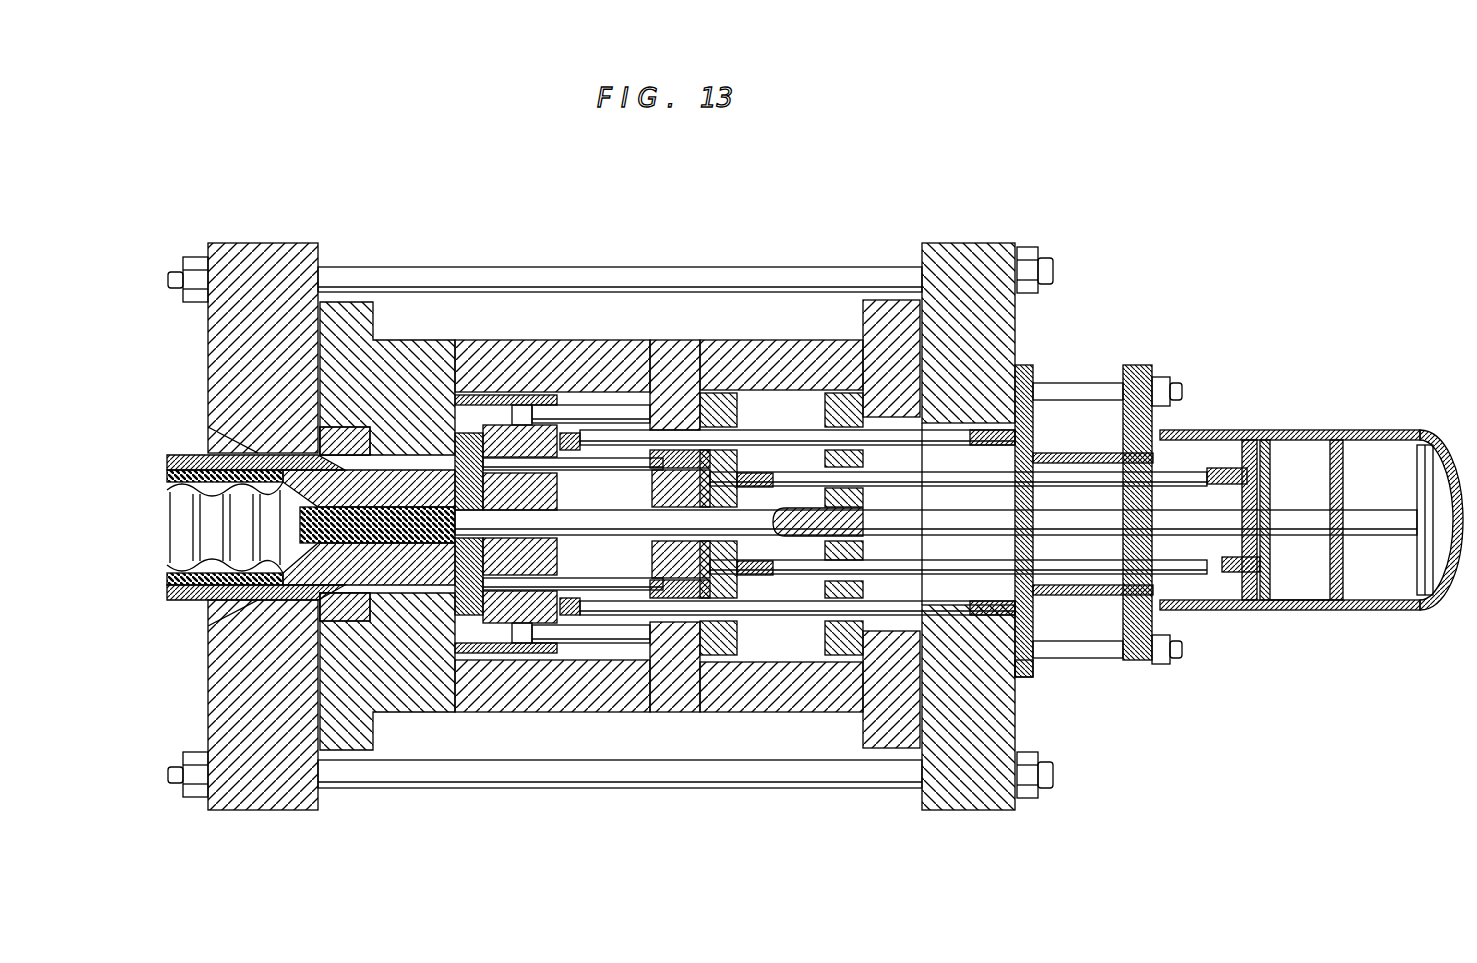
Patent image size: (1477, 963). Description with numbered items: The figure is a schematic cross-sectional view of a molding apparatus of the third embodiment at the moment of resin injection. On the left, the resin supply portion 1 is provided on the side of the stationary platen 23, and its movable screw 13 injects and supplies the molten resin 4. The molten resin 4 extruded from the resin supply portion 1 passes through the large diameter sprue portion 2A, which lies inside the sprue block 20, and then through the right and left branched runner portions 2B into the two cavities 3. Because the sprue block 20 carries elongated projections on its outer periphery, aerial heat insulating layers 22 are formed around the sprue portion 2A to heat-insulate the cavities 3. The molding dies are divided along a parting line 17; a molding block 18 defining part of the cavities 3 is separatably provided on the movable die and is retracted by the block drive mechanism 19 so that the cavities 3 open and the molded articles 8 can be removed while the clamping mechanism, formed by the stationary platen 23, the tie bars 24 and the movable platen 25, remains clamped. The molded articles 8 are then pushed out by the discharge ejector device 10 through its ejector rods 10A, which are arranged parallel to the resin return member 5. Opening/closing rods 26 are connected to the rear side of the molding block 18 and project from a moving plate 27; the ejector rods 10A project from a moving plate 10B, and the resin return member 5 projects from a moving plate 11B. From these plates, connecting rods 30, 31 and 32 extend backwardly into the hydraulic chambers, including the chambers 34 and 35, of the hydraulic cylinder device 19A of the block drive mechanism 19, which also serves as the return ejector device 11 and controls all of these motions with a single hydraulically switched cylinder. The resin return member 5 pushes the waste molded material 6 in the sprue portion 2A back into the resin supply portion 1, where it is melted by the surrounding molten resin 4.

The resin supply portion 1 is at (227, 451).
The sprue portion 2A is at (207, 702).
The runner portions 2B is at (443, 483).
The cavities 3 is at (477, 443).
The molten resin 4 is at (190, 600).
The resin return member 5 is at (710, 357).
The waste molded material 6 is at (425, 583).
The molded articles 8 is at (517, 427).
The discharge ejector device 10 is at (1180, 352).
The ejector rods 10A is at (632, 517).
The moving plate 10B is at (717, 660).
The return ejector device 11 is at (1117, 343).
The moving plate 11B is at (838, 656).
The movable screw 13 is at (197, 600).
The parting line 17 is at (450, 477).
The molding block 18 is at (555, 400).
The block drive mechanism 19 is at (1274, 404).
The hydraulic cylinder device 19A is at (1332, 430).
The sprue block 20 is at (317, 440).
The aerial heat insulating layers 22 is at (320, 423).
The stationary platen 23 is at (236, 242).
The tie bars 24 is at (805, 268).
The movable platen 25 is at (993, 805).
The opening/closing rods 26 is at (785, 437).
The moving plate 27 is at (1032, 680).
The connecting rod 30 is at (1088, 588).
The connecting rod 31 is at (1190, 473).
The connecting rod 32 is at (1353, 528).
The hydraulic chamber 34 is at (1298, 588).
The hydraulic chamber 35 is at (1388, 453).